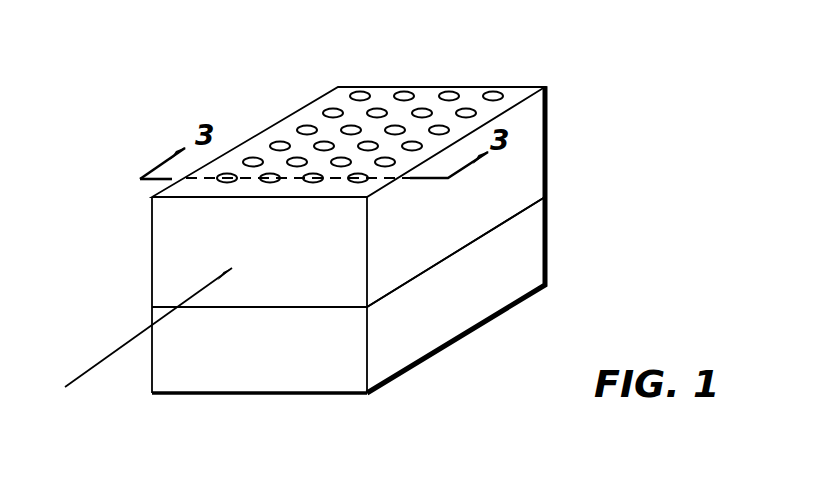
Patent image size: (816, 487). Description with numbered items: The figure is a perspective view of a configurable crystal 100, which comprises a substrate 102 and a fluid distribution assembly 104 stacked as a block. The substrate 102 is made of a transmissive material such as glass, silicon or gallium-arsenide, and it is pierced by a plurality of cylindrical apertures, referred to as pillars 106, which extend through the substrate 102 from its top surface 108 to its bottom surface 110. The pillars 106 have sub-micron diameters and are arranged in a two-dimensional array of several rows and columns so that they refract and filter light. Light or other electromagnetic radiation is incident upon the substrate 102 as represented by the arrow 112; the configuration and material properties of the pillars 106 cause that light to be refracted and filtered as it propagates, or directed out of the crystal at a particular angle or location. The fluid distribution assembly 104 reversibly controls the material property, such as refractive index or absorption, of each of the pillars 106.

The configurable crystal 100 is at (448, 254).
The substrate 102 is at (395, 254).
The fluid distribution assembly 104 is at (533, 266).
The pillars 106 is at (448, 92).
The top surface 108 is at (518, 88).
The bottom surface 110 is at (523, 213).
The arrow 112 is at (115, 350).